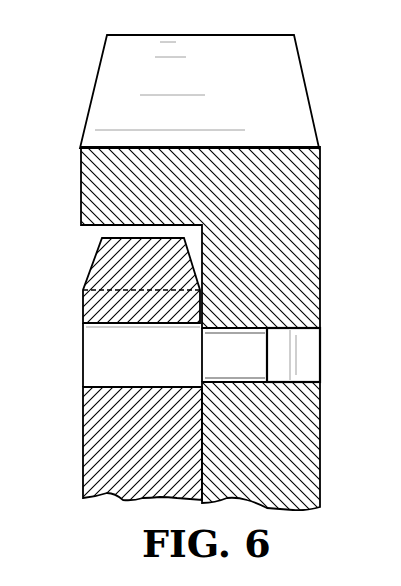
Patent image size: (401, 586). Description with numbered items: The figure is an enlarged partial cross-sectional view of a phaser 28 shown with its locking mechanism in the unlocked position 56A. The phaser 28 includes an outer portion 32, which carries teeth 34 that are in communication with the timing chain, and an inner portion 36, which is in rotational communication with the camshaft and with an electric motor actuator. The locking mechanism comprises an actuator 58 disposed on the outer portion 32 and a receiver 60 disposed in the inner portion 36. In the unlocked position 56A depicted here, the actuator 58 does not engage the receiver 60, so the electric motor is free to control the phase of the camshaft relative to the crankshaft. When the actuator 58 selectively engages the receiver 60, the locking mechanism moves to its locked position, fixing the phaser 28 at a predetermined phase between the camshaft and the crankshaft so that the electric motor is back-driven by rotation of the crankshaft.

The phaser 28 is at (71, 99).
The outer portion 32 is at (311, 185).
The teeth 34 is at (283, 62).
The inner portion 36 is at (113, 268).
The unlocked position 56A is at (60, 360).
The actuator 58 is at (250, 348).
The receiver 60 is at (93, 375).